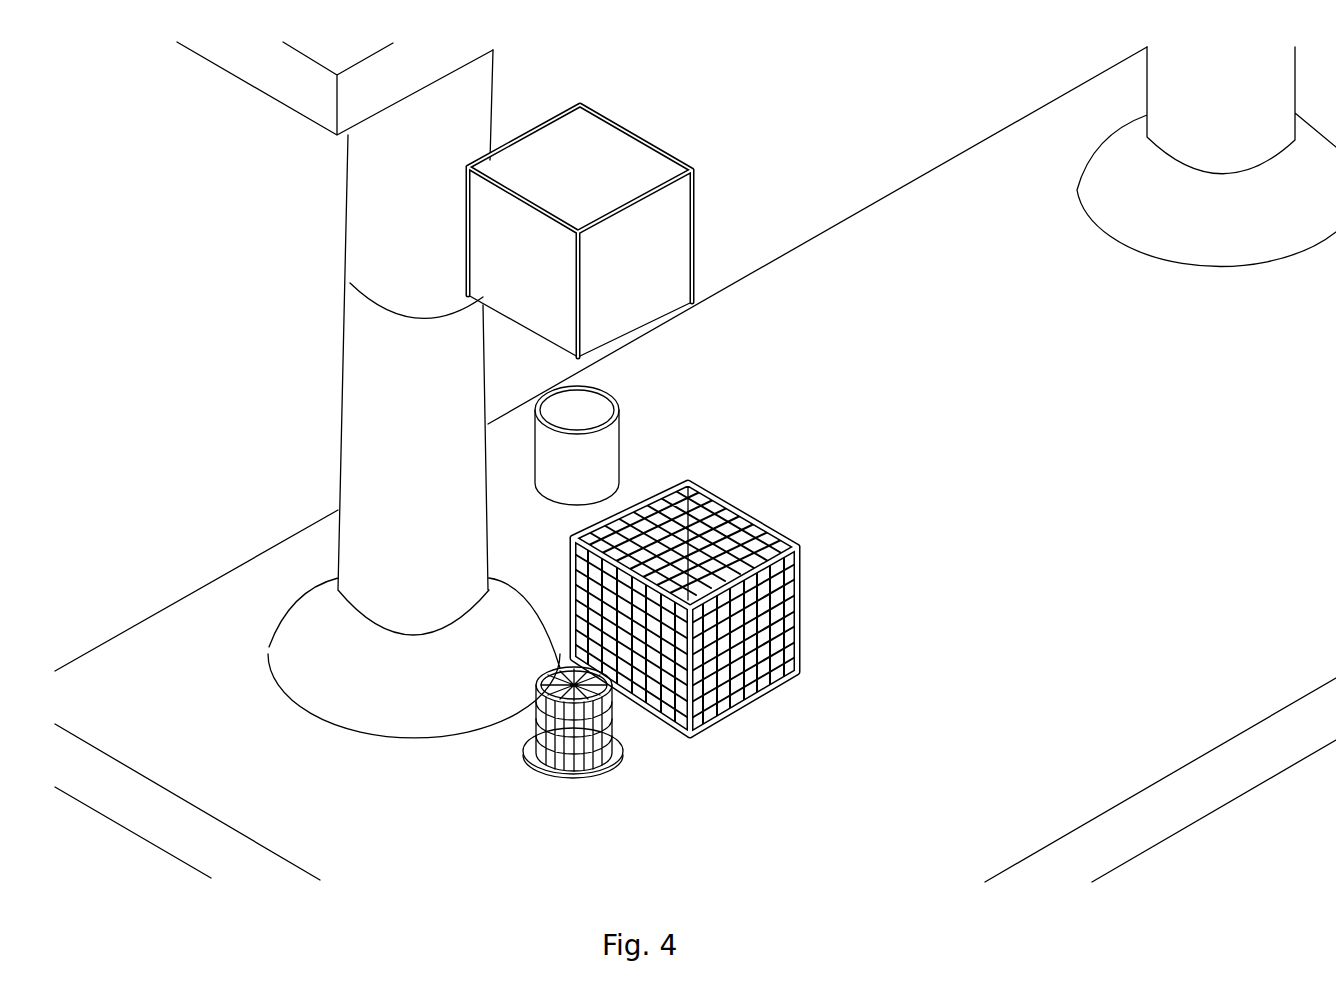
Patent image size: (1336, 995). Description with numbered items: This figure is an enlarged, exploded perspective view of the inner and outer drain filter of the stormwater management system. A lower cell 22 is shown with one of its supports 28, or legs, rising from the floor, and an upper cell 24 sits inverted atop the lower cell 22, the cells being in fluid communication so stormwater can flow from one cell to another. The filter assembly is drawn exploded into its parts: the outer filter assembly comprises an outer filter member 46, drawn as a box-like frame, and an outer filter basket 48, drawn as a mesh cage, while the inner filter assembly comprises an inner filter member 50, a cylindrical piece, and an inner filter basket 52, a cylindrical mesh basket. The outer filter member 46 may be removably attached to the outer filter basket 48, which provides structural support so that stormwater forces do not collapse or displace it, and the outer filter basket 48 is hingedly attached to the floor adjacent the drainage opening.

The lower cells 22 is at (227, 571).
The upper cells 24 is at (303, 116).
The supports 28 is at (346, 428).
The outer filter member 46 is at (693, 215).
The outer filter basket 48 is at (793, 585).
The inner filter member 50 is at (575, 412).
The inner filter basket 52 is at (535, 720).